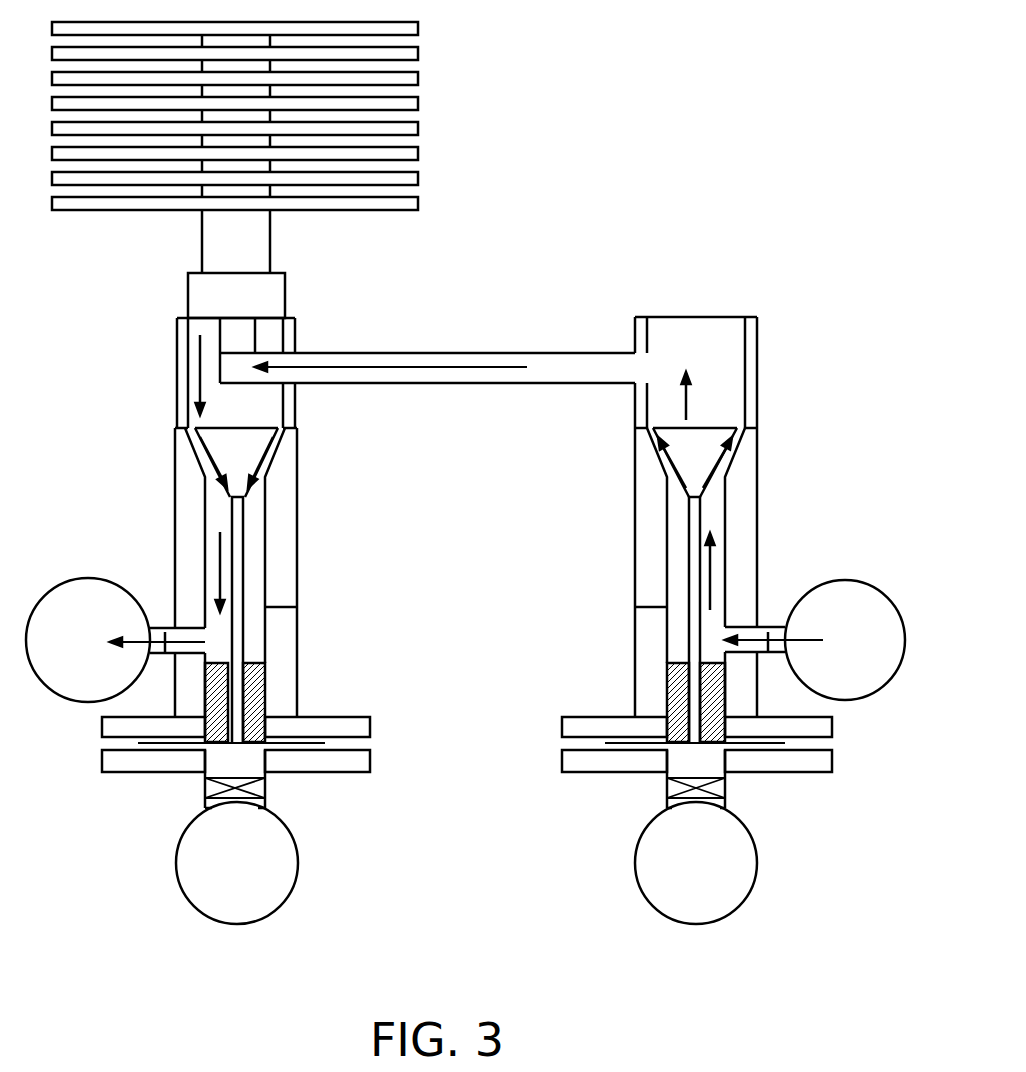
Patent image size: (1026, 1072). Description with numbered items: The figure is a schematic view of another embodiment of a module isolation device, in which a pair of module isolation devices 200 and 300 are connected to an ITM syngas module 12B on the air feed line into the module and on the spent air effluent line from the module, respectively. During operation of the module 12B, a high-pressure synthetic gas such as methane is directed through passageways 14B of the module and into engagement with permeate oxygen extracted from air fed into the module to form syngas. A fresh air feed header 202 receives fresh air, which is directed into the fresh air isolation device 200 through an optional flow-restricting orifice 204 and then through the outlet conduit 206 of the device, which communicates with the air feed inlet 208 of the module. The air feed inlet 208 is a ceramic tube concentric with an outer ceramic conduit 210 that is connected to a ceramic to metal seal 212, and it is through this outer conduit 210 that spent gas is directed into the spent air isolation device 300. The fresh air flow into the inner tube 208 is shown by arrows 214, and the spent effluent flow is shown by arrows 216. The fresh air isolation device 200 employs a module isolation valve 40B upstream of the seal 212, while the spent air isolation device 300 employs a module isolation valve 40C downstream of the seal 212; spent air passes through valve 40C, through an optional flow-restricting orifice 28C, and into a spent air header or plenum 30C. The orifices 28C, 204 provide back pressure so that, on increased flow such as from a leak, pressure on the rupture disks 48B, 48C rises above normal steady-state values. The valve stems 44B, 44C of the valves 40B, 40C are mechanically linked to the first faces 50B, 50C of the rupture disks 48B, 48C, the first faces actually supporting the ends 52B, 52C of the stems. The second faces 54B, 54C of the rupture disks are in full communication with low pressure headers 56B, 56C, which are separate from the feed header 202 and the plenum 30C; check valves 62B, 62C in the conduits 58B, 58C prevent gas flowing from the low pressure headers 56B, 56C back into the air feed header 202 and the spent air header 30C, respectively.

The ITM syngas module 12B is at (335, 147).
The passageways 14B is at (408, 168).
The outer ceramic conduit 210 is at (242, 240).
The ceramic to metal seal 212 is at (178, 288).
The air feed inlet 208 is at (242, 335).
The arrows 216 is at (203, 395).
The arrows 214 is at (447, 367).
The outlet conduit 206 is at (600, 365).
The fresh air isolation device 200 is at (717, 507).
The spent air isolation device 300 is at (310, 522).
The module isolation valve 40B is at (727, 505).
The module isolation valve 40C is at (262, 560).
The valve stem 44B is at (693, 563).
The valve stem 44C is at (237, 597).
The spent air header 30C is at (90, 592).
The flow-restricting orifice 28C is at (165, 632).
The flow-restricting orifice 204 is at (768, 630).
The fresh air feed header 202 is at (855, 595).
The second face 54B is at (637, 760).
The second face 54C is at (162, 758).
The end of valve stem 52B is at (700, 748).
The end of valve stem 52C is at (237, 748).
The first face 50B is at (620, 745).
The first face 50C is at (160, 740).
The rupture disk 48B is at (775, 745).
The rupture disk 48C is at (313, 745).
The conduit 58B is at (667, 800).
The conduit 58C is at (205, 800).
The check valve 62B is at (700, 795).
The check valve 62C is at (237, 793).
The low pressure header 56B is at (712, 892).
The low pressure header 56C is at (262, 892).